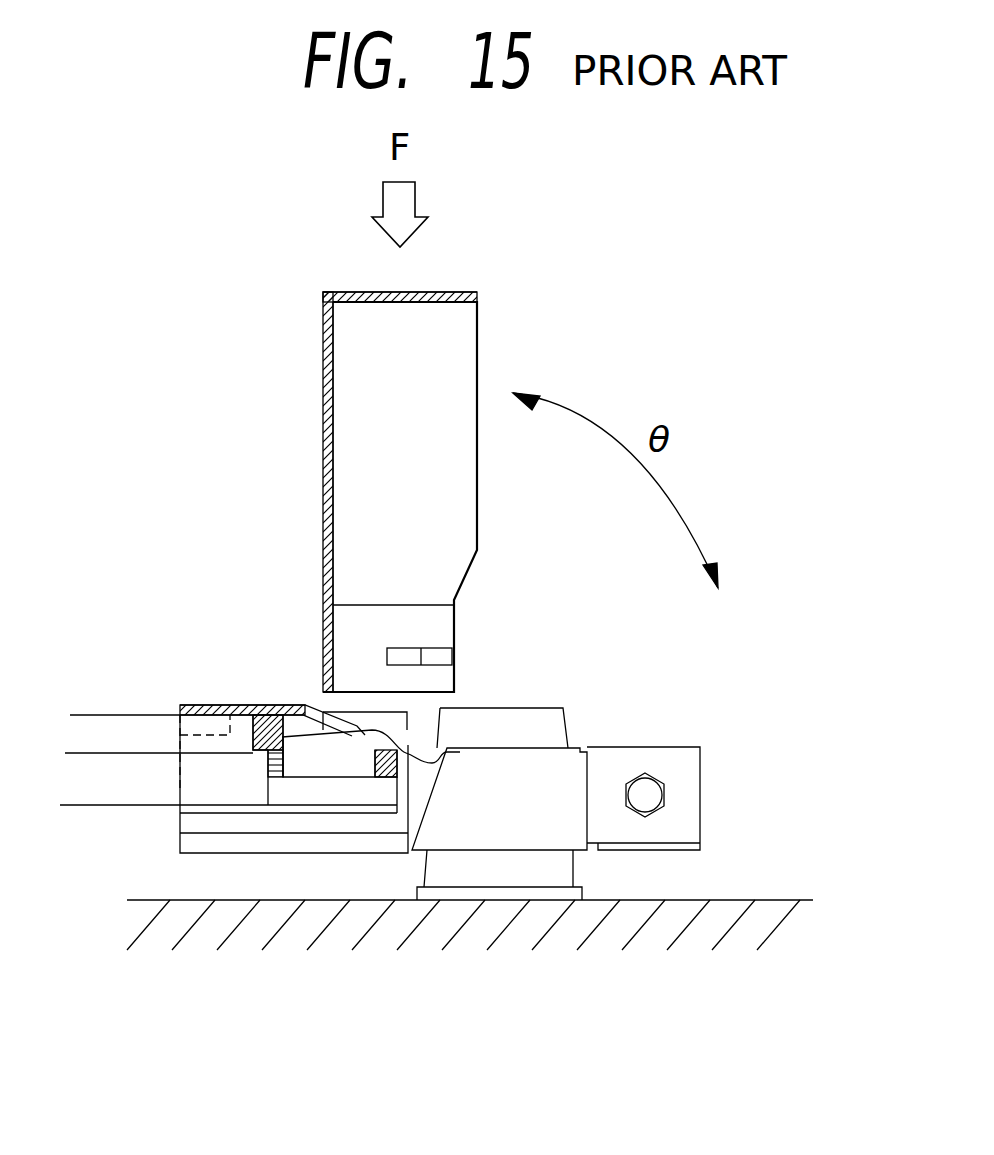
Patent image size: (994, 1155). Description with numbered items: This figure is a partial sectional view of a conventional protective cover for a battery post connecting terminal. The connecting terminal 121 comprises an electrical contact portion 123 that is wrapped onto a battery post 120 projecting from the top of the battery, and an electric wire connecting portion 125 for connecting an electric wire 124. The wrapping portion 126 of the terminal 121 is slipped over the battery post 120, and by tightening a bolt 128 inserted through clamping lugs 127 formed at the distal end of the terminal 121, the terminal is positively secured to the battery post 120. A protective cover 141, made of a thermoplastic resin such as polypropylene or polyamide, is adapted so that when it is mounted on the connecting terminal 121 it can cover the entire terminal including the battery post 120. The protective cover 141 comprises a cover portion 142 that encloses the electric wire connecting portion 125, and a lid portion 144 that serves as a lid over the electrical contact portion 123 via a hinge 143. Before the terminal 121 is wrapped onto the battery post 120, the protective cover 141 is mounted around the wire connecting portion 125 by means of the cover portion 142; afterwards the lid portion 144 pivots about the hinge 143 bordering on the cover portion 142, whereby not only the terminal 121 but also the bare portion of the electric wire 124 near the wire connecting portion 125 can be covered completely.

The battery post 120 is at (547, 720).
The connecting terminal 121 is at (548, 868).
The electrical contact portion 123 is at (563, 793).
The electric wire 124 is at (98, 723).
The electric wire connecting portion 125 is at (342, 765).
The wrapping portion 126 is at (477, 827).
The clamping lugs 127 is at (685, 812).
The bolt 128 is at (647, 803).
The protective cover 141 is at (312, 421).
The cover portion 142 is at (275, 853).
The hinge 143 is at (320, 700).
The lid portion 144 is at (323, 343).